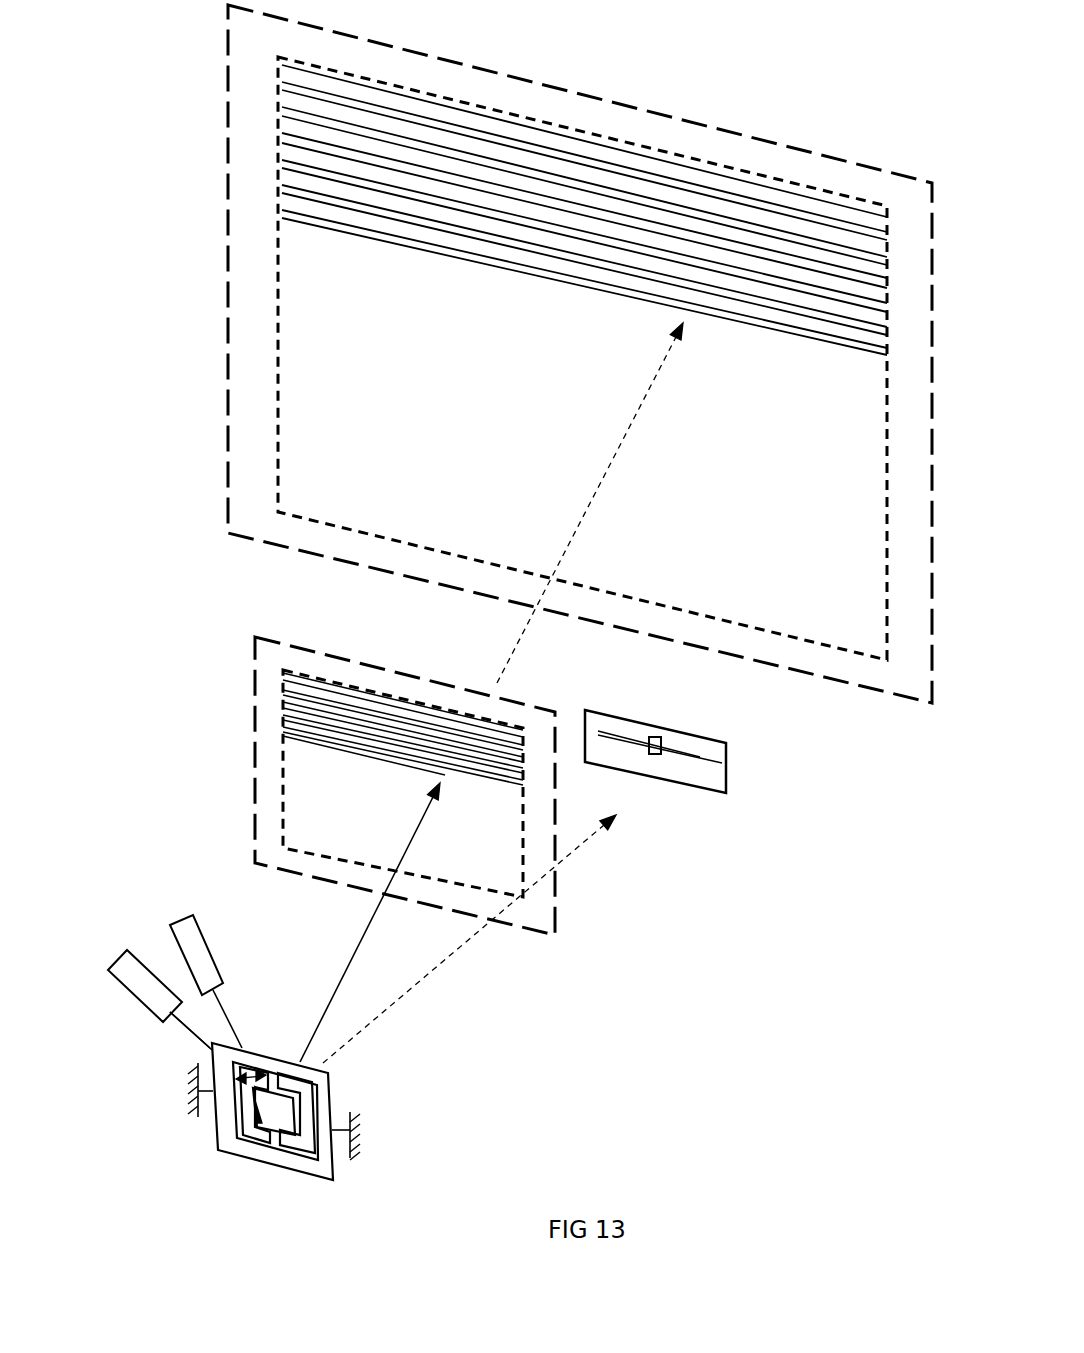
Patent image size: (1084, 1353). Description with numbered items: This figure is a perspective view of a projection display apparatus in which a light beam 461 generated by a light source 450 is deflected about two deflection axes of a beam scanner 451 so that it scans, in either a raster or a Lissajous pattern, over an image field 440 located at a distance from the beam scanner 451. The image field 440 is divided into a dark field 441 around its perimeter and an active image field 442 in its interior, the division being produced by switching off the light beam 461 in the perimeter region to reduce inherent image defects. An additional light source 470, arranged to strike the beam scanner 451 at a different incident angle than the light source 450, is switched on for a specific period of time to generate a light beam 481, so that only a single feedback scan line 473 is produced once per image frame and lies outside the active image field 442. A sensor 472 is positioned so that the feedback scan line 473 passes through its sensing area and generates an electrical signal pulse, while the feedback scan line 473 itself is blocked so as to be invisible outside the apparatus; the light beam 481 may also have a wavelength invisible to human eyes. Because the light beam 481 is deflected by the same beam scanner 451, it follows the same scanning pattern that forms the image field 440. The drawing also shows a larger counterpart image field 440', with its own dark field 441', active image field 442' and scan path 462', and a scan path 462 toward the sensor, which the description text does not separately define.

The projection screen region (larger) 440' is at (526, 354).
The inner screen boundary (larger) 441' is at (503, 358).
The scan lines (larger) 442' is at (503, 246).
The scanned beam path (larger) 462' is at (639, 503).
The image field 440 is at (358, 786).
The dark field 441 is at (342, 783).
The active image field 442 is at (342, 738).
The light beam 461 is at (238, 1018).
The beam path to detector 462 is at (469, 939).
The sensor 472 is at (652, 740).
The feedback scan line 473 is at (700, 752).
The beam scanner 451 is at (257, 1162).
The light source 450 is at (197, 952).
The additional light source 470 is at (132, 980).
The light beam 481 is at (180, 1035).